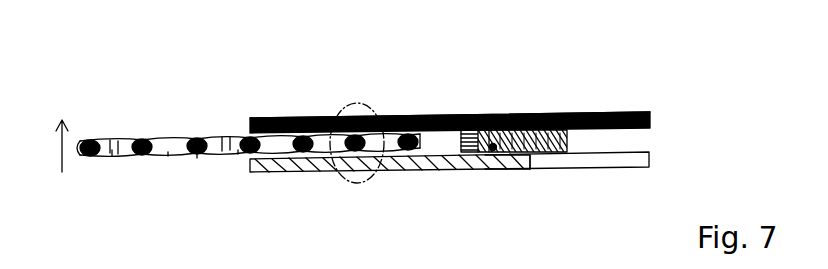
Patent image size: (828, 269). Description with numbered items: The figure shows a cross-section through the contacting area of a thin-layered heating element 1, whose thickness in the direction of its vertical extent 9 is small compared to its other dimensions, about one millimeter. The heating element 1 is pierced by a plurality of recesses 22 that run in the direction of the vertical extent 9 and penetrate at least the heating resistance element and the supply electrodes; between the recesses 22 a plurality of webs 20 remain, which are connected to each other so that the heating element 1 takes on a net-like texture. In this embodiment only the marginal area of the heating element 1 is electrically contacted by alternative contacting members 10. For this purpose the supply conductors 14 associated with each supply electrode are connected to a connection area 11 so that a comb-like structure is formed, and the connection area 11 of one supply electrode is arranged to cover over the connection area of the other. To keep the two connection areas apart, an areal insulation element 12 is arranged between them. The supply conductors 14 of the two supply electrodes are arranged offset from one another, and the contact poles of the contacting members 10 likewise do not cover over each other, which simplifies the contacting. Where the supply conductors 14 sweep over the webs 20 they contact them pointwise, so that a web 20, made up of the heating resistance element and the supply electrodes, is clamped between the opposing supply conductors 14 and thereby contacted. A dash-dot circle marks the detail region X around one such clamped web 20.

The heating element 1 is at (169, 134).
The vertical extent 9 is at (60, 152).
The contacting member 10 is at (650, 120).
The connection area 11 is at (507, 98).
The areal insulation element 12 is at (491, 149).
The supply conductor 14 is at (268, 119).
The web 20 is at (163, 164).
The recess 22 is at (122, 120).
The detail region X is at (372, 104).